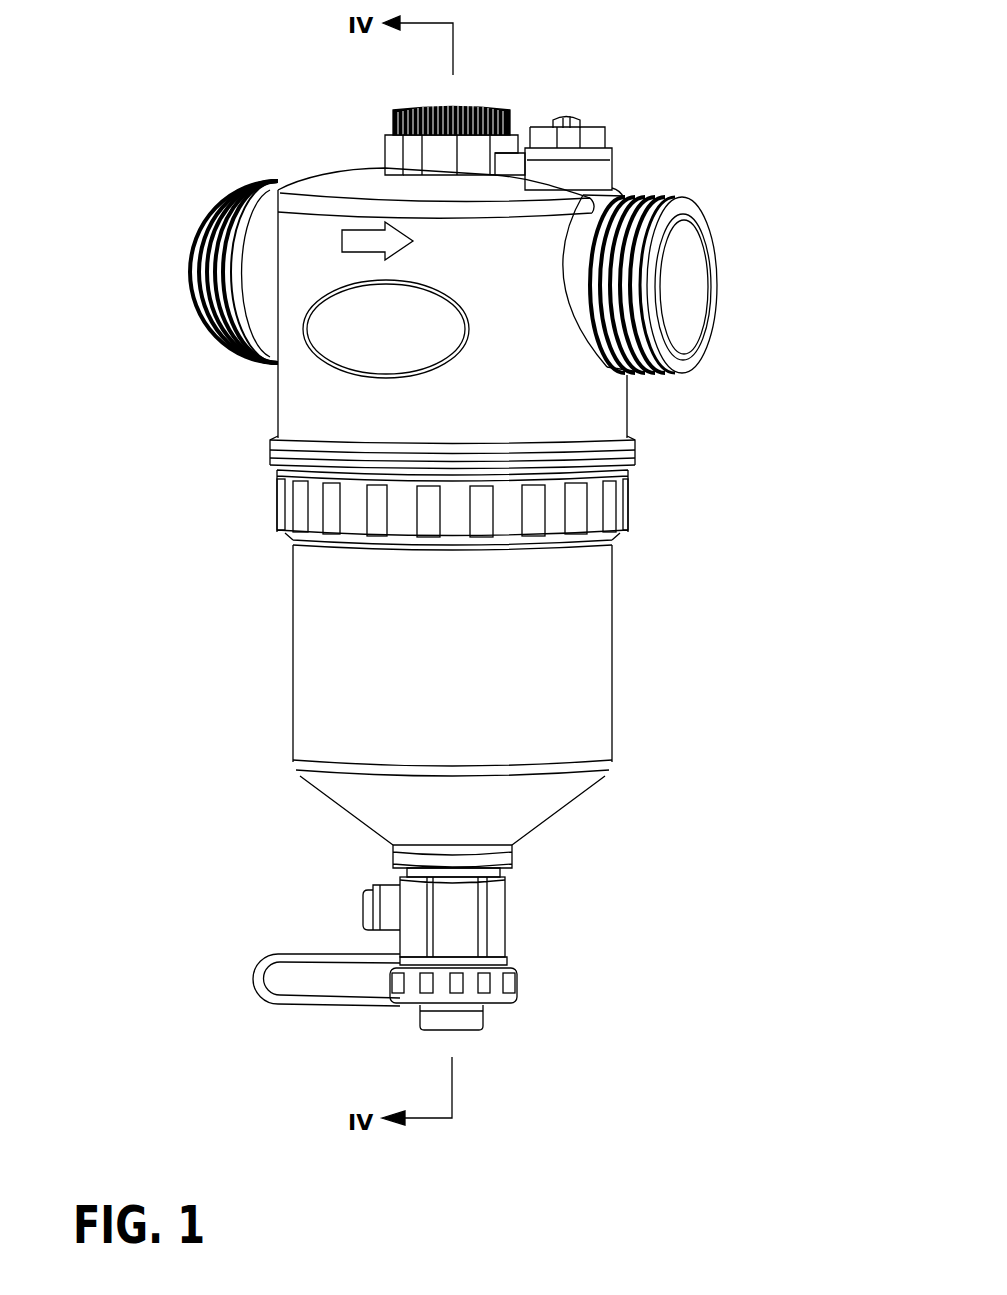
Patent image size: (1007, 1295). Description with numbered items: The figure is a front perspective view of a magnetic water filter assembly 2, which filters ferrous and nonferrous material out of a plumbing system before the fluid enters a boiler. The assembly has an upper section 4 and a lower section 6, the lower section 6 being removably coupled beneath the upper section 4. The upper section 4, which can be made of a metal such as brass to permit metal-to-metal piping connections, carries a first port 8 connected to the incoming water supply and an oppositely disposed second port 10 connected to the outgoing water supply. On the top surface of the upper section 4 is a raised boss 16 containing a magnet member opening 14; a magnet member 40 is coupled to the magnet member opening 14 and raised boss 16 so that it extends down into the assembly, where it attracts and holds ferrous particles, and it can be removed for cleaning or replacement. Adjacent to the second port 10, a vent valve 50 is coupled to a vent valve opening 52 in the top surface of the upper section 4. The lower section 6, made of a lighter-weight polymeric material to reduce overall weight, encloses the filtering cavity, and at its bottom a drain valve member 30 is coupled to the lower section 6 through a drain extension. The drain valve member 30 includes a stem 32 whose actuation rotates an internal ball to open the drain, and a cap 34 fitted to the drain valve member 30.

The magnetic water filter assembly 2 is at (640, 421).
The upper section 4 is at (305, 412).
The lower section 6 is at (337, 620).
The first port 8 is at (180, 255).
The second port 10 is at (690, 283).
The magnet member opening 14 is at (390, 133).
The raised boss 16 is at (383, 157).
The drain valve member 30 is at (487, 922).
The stem 32 is at (365, 910).
The cap 34 is at (488, 1007).
The magnet member 40 is at (493, 108).
The vent valve 50 is at (592, 125).
The vent valve opening 52 is at (613, 152).